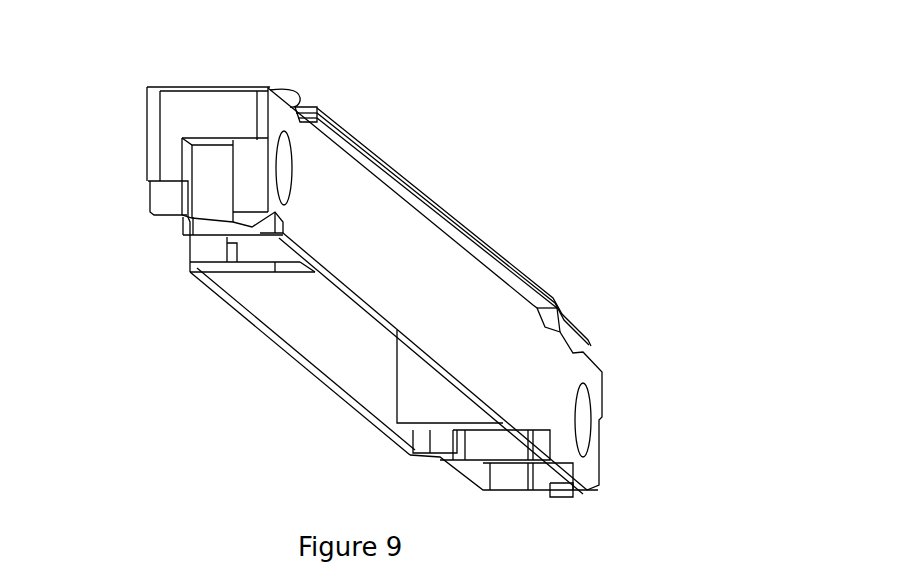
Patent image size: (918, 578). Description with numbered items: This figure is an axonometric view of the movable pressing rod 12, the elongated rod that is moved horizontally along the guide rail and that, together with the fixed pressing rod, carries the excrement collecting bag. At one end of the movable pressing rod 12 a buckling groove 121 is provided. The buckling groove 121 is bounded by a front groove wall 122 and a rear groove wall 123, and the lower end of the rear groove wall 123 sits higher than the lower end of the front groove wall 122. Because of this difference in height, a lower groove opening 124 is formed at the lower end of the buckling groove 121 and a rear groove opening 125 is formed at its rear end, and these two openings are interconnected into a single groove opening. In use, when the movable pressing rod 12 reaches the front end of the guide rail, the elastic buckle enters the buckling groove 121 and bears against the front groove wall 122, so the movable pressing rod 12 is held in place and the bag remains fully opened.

The movable pressing rod 12 is at (472, 218).
The buckling groove 121 is at (207, 87).
The front groove wall 122 is at (252, 188).
The rear groove wall 123 is at (174, 162).
The lower groove opening 124 is at (210, 228).
The rear groove opening 125 is at (137, 208).